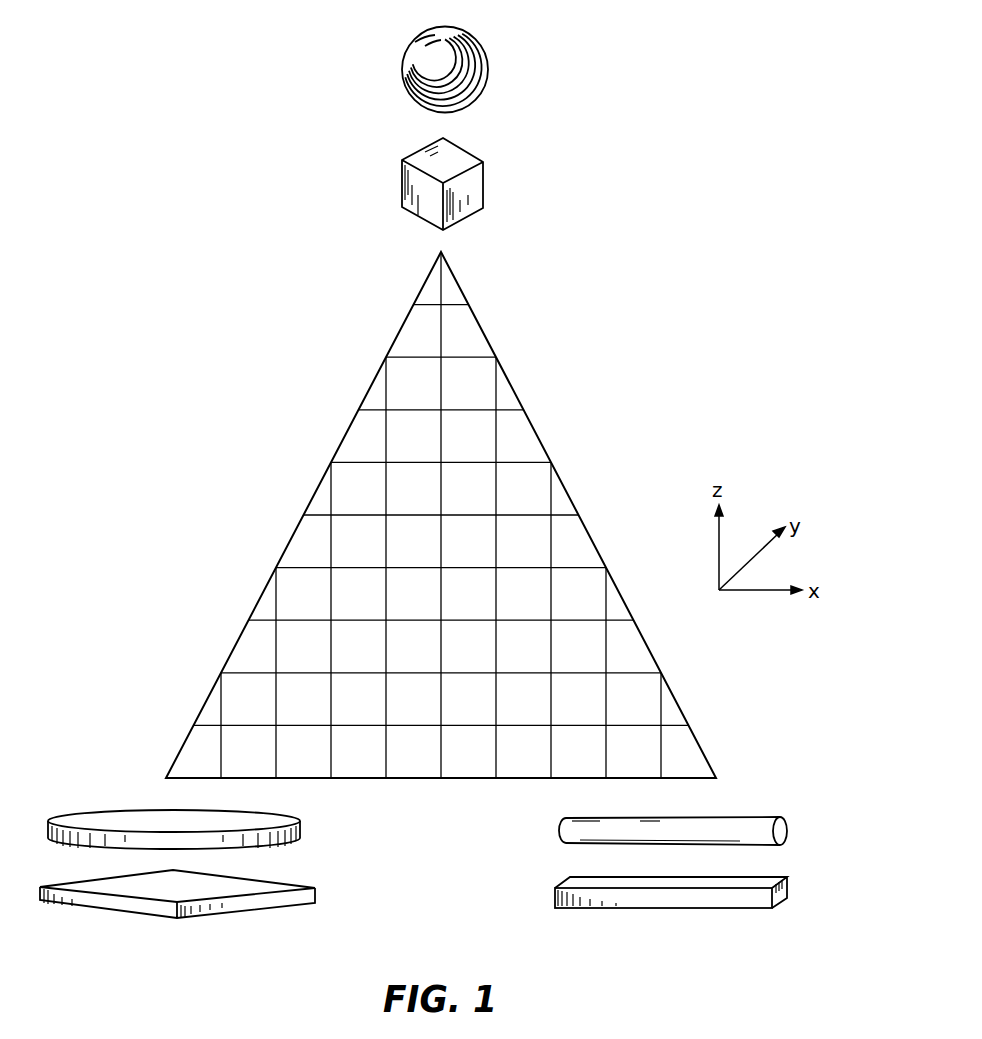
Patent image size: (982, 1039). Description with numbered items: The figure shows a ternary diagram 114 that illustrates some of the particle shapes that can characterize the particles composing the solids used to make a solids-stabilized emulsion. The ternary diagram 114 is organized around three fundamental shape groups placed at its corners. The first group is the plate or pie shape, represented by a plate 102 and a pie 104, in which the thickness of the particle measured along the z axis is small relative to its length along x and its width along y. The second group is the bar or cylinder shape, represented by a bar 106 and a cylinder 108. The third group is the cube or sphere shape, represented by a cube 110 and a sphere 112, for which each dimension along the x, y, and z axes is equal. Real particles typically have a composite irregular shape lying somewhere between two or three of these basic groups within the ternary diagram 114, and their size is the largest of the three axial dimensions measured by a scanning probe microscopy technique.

The plate shape 102 is at (320, 890).
The pie shape 104 is at (303, 825).
The bar shape 106 is at (788, 880).
The cylinder shape 108 is at (788, 823).
The cube shape 110 is at (483, 165).
The sphere shape 112 is at (487, 62).
The ternary diagram 114 is at (487, 340).